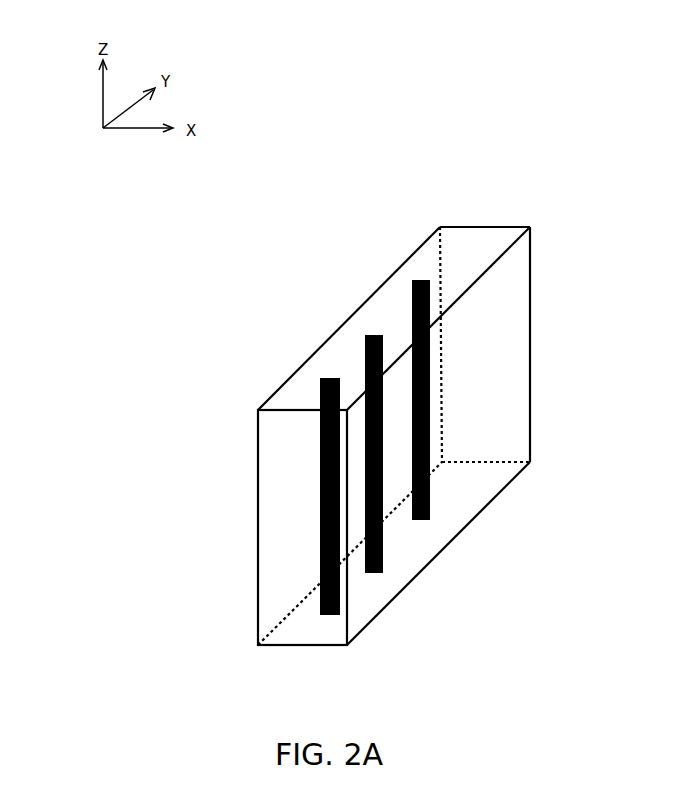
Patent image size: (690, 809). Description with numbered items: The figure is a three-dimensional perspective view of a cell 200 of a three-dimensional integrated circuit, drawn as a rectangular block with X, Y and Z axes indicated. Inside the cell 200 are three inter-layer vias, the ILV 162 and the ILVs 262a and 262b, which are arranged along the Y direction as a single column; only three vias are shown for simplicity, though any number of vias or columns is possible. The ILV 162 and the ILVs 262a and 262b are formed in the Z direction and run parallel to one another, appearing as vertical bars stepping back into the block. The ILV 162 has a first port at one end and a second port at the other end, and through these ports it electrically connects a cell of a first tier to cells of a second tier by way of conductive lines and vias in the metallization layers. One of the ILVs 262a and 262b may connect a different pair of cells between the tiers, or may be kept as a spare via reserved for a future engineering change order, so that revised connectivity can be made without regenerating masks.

The cell 200 is at (594, 172).
The ILV 162 is at (322, 527).
The ILV 262a is at (365, 340).
The ILV 262b is at (412, 300).